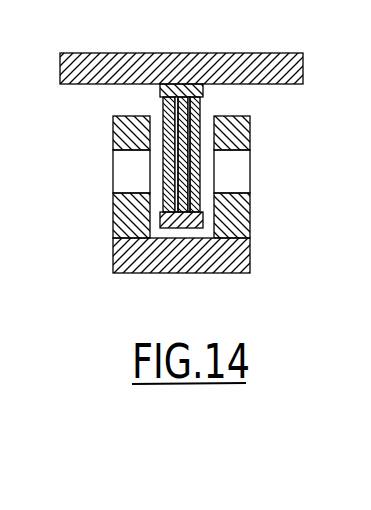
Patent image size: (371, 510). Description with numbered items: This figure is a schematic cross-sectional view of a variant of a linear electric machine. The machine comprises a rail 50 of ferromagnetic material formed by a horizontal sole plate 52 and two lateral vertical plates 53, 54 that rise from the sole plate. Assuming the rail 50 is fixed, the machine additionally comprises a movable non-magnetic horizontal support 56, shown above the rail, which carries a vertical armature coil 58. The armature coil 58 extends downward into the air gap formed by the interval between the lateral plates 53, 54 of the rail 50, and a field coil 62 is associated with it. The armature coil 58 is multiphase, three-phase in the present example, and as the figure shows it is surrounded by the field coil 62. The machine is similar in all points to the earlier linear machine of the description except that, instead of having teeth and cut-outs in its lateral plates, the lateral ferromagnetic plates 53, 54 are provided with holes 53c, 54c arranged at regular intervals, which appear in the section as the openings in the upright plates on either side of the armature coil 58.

The rail 50 is at (266, 249).
The horizontal sole plate 52 is at (130, 255).
The lateral vertical plate 53 is at (137, 212).
The holes 53c is at (125, 168).
The lateral vertical plate 54 is at (237, 207).
The holes 54c is at (235, 165).
The movable non-magnetic horizontal support 56 is at (267, 60).
The armature coil 58 is at (173, 112).
The field coil 62 is at (193, 93).